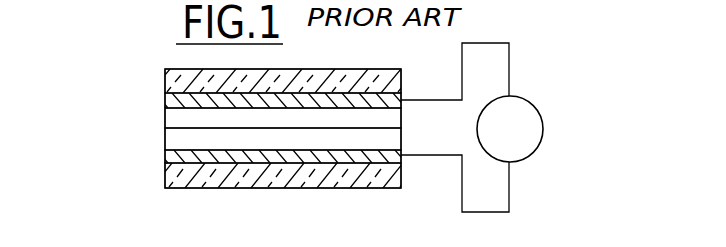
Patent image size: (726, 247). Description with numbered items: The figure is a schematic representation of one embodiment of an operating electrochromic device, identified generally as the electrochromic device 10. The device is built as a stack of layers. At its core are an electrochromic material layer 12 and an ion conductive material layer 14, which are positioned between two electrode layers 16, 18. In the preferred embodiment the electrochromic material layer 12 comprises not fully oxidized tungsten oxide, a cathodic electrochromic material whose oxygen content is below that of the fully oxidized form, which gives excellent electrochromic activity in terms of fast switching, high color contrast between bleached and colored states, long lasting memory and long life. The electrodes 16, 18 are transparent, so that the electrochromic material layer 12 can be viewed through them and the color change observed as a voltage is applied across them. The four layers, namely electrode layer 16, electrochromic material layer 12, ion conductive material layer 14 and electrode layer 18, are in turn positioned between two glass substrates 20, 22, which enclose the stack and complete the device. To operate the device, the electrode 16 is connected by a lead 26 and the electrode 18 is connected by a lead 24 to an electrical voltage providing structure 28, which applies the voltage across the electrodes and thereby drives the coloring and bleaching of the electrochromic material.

The electrochromic device 10 is at (88, 152).
The electrochromic material layer 12 is at (165, 143).
The ion conductive material layer 14 is at (165, 117).
The electrode layer 16 is at (165, 158).
The electrode layer 18 is at (165, 100).
The glass substrate 20 is at (173, 188).
The glass substrate 22 is at (165, 77).
The lead 24 is at (462, 45).
The lead 26 is at (462, 188).
The electrical voltage providing structure 28 is at (543, 121).